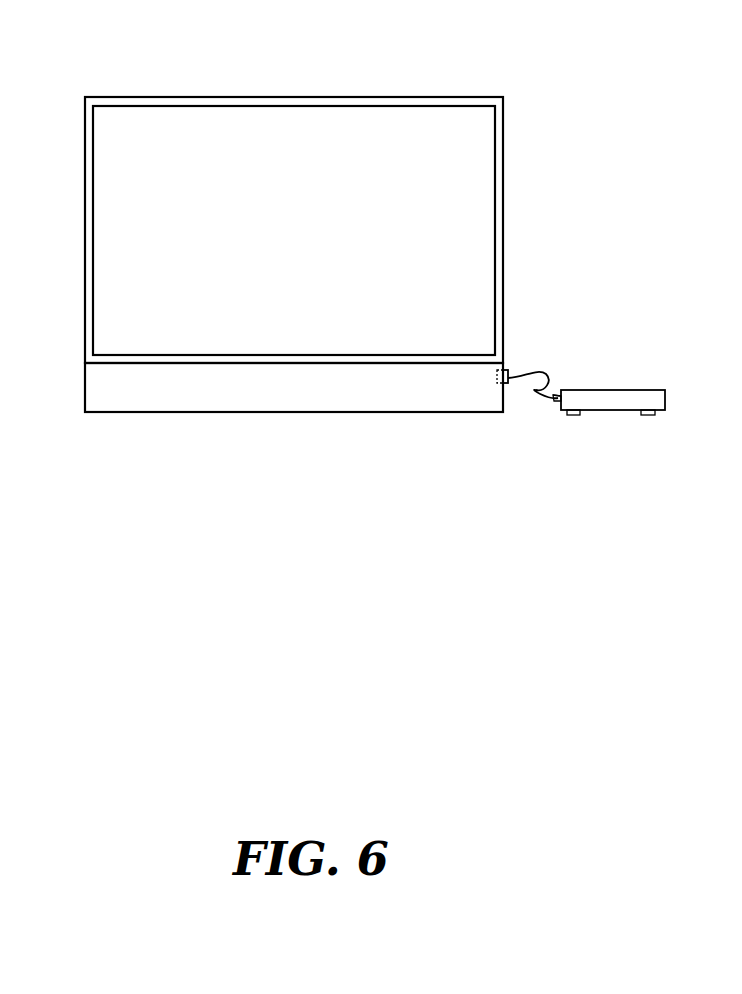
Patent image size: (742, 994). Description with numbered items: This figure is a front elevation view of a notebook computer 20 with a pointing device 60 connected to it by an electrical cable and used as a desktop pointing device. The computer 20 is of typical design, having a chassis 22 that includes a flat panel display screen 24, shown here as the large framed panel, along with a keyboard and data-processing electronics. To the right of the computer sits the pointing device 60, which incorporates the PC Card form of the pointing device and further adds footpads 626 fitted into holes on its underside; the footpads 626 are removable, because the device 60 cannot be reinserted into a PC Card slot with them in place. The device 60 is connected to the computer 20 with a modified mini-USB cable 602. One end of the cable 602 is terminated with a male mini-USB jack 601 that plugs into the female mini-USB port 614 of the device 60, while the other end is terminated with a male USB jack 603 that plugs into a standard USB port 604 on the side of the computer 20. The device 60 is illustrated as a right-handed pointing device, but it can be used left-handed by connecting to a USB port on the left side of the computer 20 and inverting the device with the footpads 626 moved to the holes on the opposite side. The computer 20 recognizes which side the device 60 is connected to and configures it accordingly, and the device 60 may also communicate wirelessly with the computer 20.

The notebook computer 20 is at (337, 76).
The chassis 22 is at (298, 414).
The flat panel display screen 24 is at (444, 198).
The pointing device 60 is at (652, 390).
The male mini-USB jack 601 is at (555, 399).
The mini-USB cable 602 is at (544, 375).
The male USB jack 603 is at (507, 371).
The USB port 604 is at (499, 377).
The female mini-USB port 614 is at (557, 402).
The footpads 626 is at (578, 416).